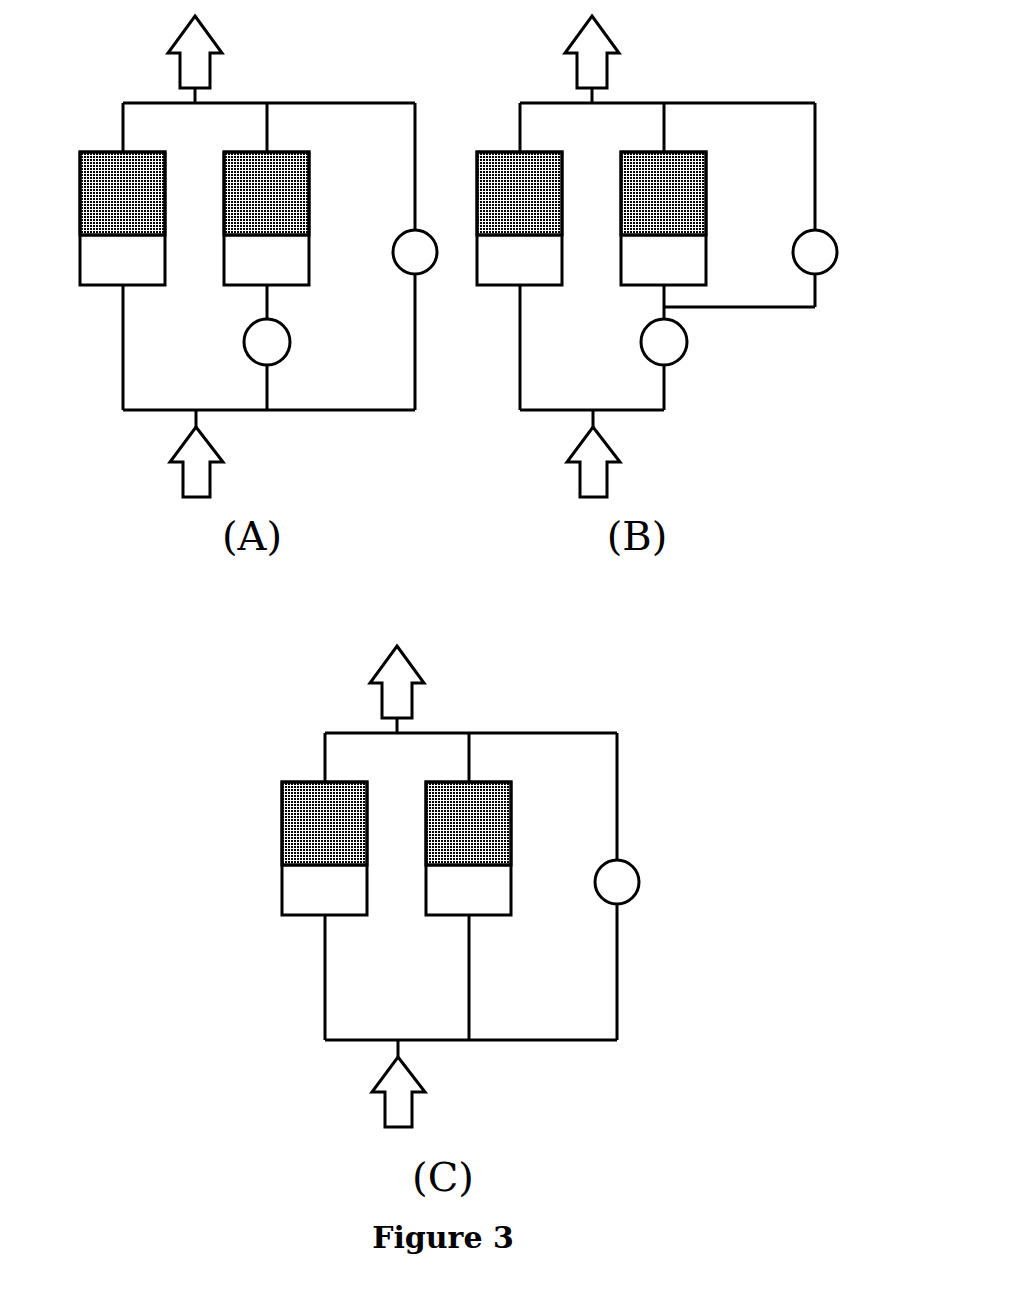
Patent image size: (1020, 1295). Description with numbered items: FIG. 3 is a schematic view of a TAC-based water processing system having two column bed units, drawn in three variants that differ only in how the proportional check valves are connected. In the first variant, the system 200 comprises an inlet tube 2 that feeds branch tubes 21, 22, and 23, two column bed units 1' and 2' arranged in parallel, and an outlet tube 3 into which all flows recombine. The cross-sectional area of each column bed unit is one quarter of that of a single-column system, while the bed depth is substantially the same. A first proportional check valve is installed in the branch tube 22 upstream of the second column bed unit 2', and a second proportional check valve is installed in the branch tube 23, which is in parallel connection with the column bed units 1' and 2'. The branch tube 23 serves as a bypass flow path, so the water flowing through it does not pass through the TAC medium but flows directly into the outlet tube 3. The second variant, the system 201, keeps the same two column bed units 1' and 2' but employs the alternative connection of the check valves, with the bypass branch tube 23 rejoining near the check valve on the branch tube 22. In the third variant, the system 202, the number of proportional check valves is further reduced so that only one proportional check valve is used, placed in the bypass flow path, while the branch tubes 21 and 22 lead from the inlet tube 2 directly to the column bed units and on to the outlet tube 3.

The first column bed unit 1' is at (303, 533).
The second column bed unit 2' is at (452, 533).
The inlet tube 2 is at (395, 768).
The outlet tube 3 is at (393, 374).
The branch tube 21 is at (379, 571).
The branch tube 22 is at (463, 571).
The branch tube 23 is at (612, 571).
The TAC-based water processing system 200 is at (340, 60).
The TAC-based water processing system 201 is at (752, 65).
The TAC-based water processing system 202 is at (543, 698).